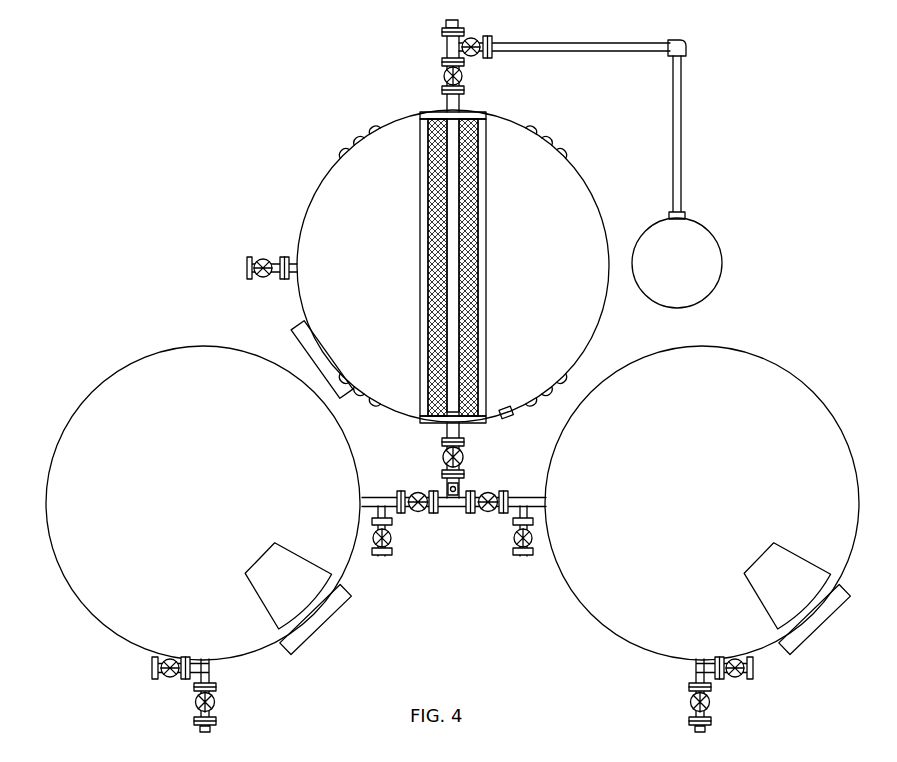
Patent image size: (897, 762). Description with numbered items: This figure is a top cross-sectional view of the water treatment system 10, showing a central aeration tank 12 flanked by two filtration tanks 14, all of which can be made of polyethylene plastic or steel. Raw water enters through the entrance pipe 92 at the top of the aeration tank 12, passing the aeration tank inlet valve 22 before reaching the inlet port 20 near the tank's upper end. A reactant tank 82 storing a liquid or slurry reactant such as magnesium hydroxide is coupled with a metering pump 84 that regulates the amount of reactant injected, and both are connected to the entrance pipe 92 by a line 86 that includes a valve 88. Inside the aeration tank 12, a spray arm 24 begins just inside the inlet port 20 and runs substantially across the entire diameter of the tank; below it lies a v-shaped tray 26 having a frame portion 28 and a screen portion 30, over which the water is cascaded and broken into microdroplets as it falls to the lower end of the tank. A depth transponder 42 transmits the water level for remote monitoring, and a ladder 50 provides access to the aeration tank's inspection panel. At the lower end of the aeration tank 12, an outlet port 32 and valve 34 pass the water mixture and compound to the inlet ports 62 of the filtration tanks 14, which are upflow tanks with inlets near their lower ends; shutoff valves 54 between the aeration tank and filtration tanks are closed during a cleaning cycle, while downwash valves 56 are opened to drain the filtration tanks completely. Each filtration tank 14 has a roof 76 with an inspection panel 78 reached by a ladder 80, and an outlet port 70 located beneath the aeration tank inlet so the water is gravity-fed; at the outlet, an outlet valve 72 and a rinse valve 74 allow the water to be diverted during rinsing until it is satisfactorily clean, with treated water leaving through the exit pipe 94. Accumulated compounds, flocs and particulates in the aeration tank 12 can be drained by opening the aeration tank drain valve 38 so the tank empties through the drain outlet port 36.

The water treatment system 10 is at (814, 169).
The aeration tank 12 is at (585, 185).
The filtration tank 14 is at (793, 364).
The inlet port 20 is at (458, 112).
The aeration tank inlet valve 22 is at (442, 76).
The spray arm 24 is at (460, 216).
The v-shaped tray 26 is at (420, 195).
The frame portion 28 is at (428, 255).
The screen portion 30 is at (436, 312).
The outlet port 32 is at (460, 428).
The valve 34 is at (443, 456).
The drain outlet port 36 is at (290, 264).
The aeration tank drain valve 38 is at (264, 278).
The depth transponder 42 is at (510, 420).
The ladder 50 is at (297, 340).
The shutoff valve 54 is at (487, 491).
The downwash valve 56 is at (513, 538).
The inlet port 62 is at (528, 497).
The outlet port 70 is at (702, 666).
The outlet valve 72 is at (690, 702).
The rinse valve 74 is at (736, 678).
The roof 76 is at (857, 538).
The inspection panel 78 is at (764, 562).
The ladder 80 is at (825, 616).
The reactant tank 82 is at (722, 262).
The metering pump 84 is at (686, 215).
The line 86 is at (681, 130).
The valve 88 is at (476, 55).
The entrance pipe 92 is at (446, 24).
The exit pipe 94 is at (695, 729).